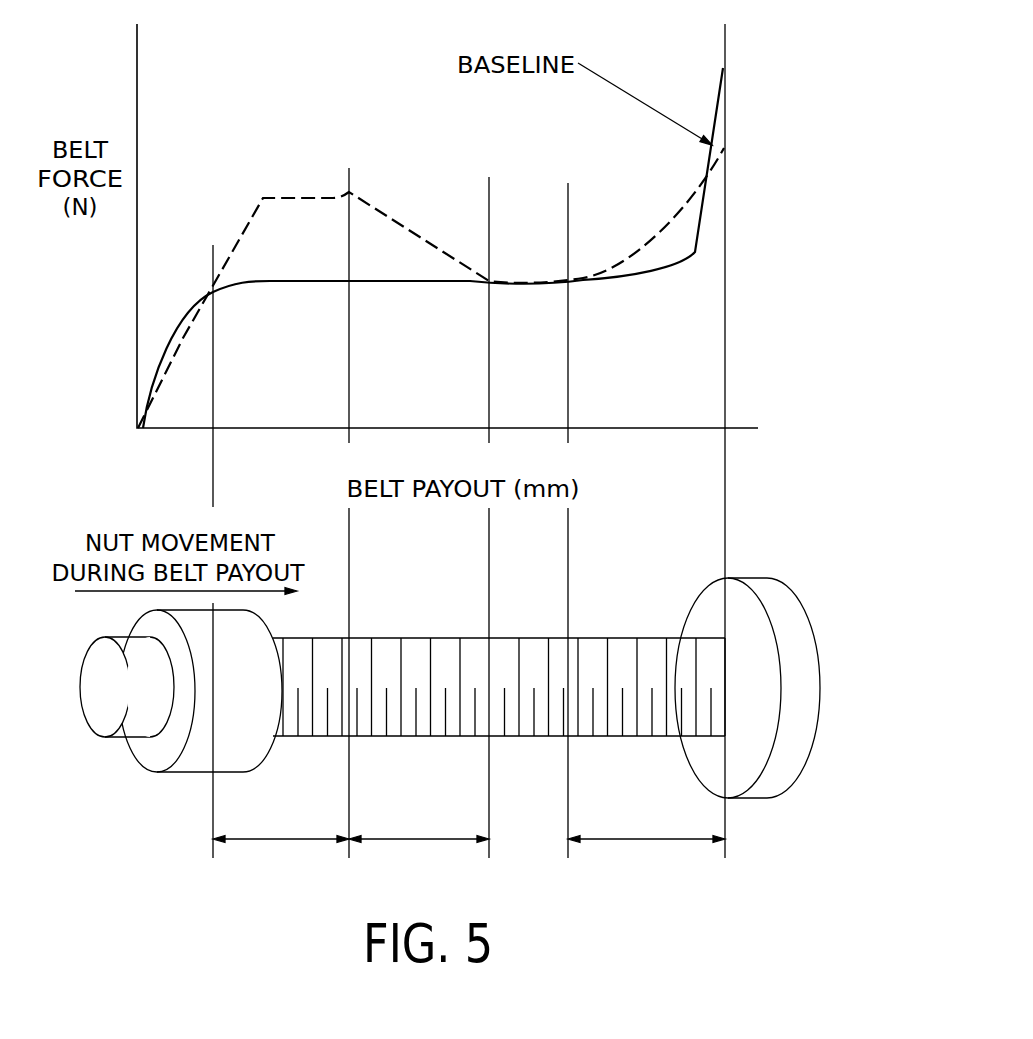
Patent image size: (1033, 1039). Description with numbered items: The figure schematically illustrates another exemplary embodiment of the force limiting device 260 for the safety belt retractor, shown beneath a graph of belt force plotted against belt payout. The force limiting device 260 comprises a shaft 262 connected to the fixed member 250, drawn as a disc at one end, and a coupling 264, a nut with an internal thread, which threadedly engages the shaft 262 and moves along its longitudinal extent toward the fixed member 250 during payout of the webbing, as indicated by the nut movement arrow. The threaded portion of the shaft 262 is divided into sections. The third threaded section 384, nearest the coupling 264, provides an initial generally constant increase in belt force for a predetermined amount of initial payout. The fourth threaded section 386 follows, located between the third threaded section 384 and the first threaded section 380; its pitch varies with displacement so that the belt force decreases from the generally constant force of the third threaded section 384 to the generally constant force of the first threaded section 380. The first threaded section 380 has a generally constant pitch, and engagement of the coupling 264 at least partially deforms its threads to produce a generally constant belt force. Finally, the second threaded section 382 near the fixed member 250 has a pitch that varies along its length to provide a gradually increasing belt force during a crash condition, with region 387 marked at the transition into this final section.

The fixed member 250 is at (773, 598).
The force limiting device 260 is at (250, 862).
The shaft 262 is at (532, 832).
The coupling 264 is at (150, 750).
The first threaded section 380 is at (532, 637).
The second threaded section 382 is at (623, 637).
The third threaded section 384 is at (305, 738).
The fourth threaded section 386 is at (415, 638).
The transition region 387 is at (602, 557).